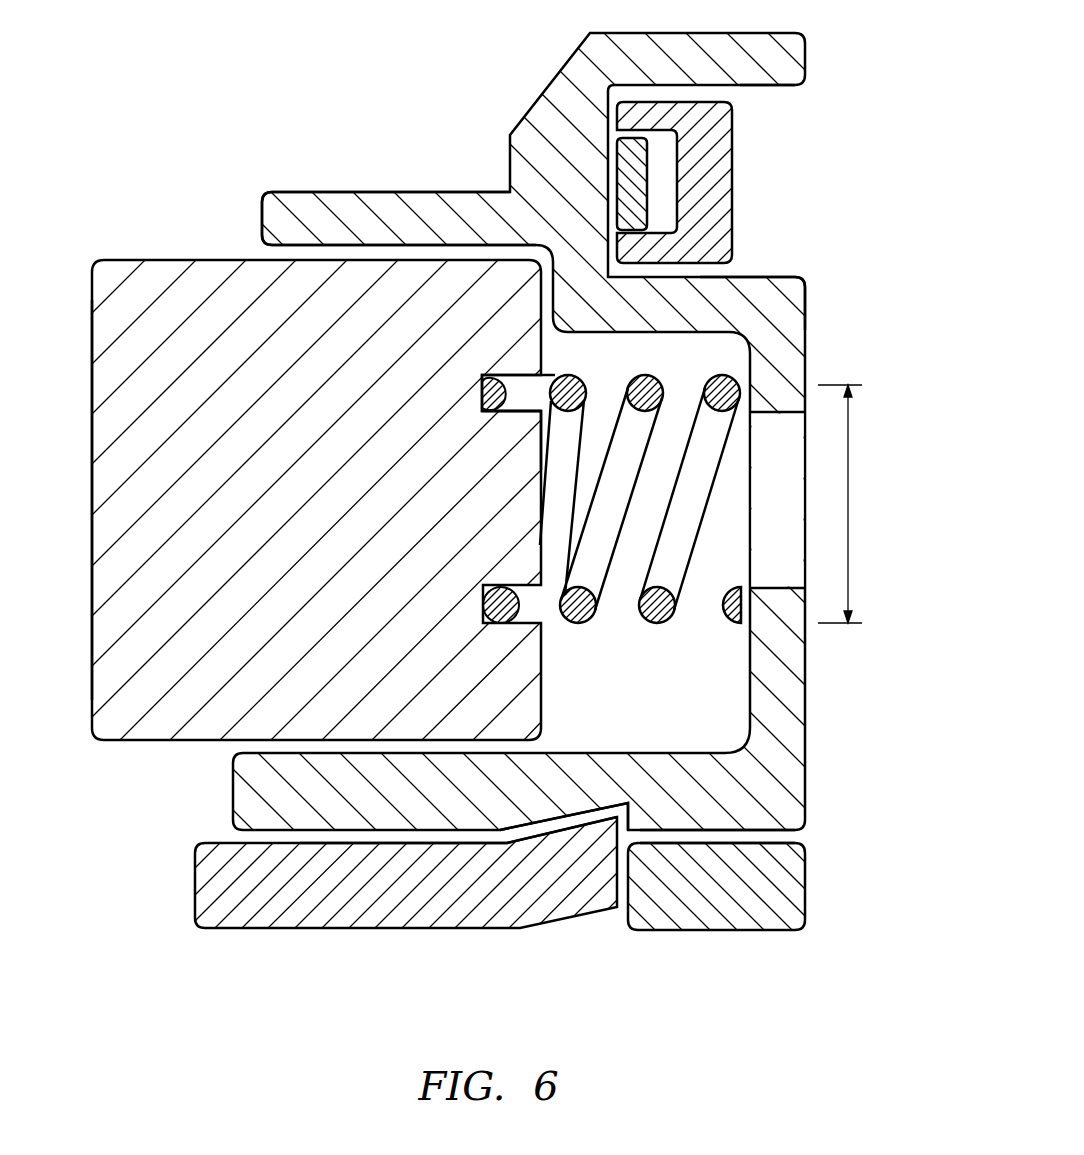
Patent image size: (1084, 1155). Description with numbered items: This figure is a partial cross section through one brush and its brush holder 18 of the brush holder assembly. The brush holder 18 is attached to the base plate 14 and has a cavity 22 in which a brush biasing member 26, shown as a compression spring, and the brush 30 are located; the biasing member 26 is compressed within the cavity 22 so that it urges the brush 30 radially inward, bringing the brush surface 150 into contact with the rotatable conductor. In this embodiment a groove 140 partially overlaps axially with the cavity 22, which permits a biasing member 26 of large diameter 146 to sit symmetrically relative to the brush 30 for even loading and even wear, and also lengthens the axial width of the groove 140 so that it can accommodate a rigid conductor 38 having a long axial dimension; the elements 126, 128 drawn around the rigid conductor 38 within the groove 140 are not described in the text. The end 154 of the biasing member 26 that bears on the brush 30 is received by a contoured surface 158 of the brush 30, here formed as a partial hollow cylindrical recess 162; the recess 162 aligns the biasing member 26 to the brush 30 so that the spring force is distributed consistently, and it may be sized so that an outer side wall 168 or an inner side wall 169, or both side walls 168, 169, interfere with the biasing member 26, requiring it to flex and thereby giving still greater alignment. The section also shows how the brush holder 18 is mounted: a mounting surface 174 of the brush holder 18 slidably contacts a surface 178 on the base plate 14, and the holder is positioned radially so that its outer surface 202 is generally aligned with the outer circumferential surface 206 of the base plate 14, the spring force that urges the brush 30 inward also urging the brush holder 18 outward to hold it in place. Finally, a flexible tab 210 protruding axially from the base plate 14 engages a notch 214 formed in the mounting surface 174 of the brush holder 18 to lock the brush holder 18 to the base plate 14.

The base plate 14 is at (807, 900).
The brush holder 18 is at (355, 190).
The cavity 22 is at (703, 700).
The brush biasing member 26 is at (665, 612).
The brush 30 is at (152, 258).
The rigid conductor 38 is at (650, 208).
The seal ring 126 is at (764, 182).
The seal element 128 is at (733, 138).
The groove 140 is at (770, 181).
The large diameter 146 is at (852, 437).
The brush surface 150 is at (92, 460).
The end of the biasing member 154 is at (482, 382).
The contoured surface 158 is at (649, 514).
The partial hollow cylindrical recess 162 is at (508, 415).
The outer side wall 168 is at (551, 378).
The inner side wall 169 is at (526, 410).
The mounting surface 174 is at (318, 834).
The surface 178 is at (758, 838).
The outer surface 202 is at (808, 292).
The outer circumferential surface 206 is at (812, 856).
The flexible tab 210 is at (587, 862).
The notch 214 is at (580, 813).